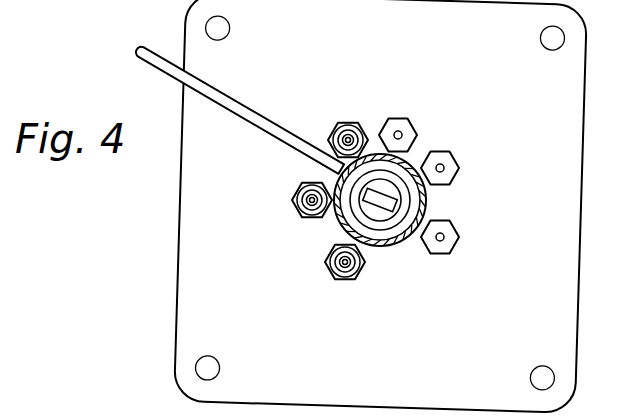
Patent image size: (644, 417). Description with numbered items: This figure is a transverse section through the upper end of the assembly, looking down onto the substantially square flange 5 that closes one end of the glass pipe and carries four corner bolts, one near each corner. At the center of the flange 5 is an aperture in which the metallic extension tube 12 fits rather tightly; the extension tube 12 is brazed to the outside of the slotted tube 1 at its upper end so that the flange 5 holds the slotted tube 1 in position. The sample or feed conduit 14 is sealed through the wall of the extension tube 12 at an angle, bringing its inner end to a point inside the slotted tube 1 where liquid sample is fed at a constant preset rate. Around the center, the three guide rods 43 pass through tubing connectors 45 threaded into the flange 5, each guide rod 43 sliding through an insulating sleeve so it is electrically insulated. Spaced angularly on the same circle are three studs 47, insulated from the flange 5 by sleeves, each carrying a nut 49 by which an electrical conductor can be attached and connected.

The slotted tube 1 is at (386, 208).
The flange 5 is at (584, 252).
The extension tube 12 is at (412, 163).
The sample or feed conduit 14 is at (222, 100).
The guide rod 43 is at (348, 125).
The tubing connector 45 is at (337, 130).
The stud 47 is at (400, 134).
The nut 49 is at (398, 135).